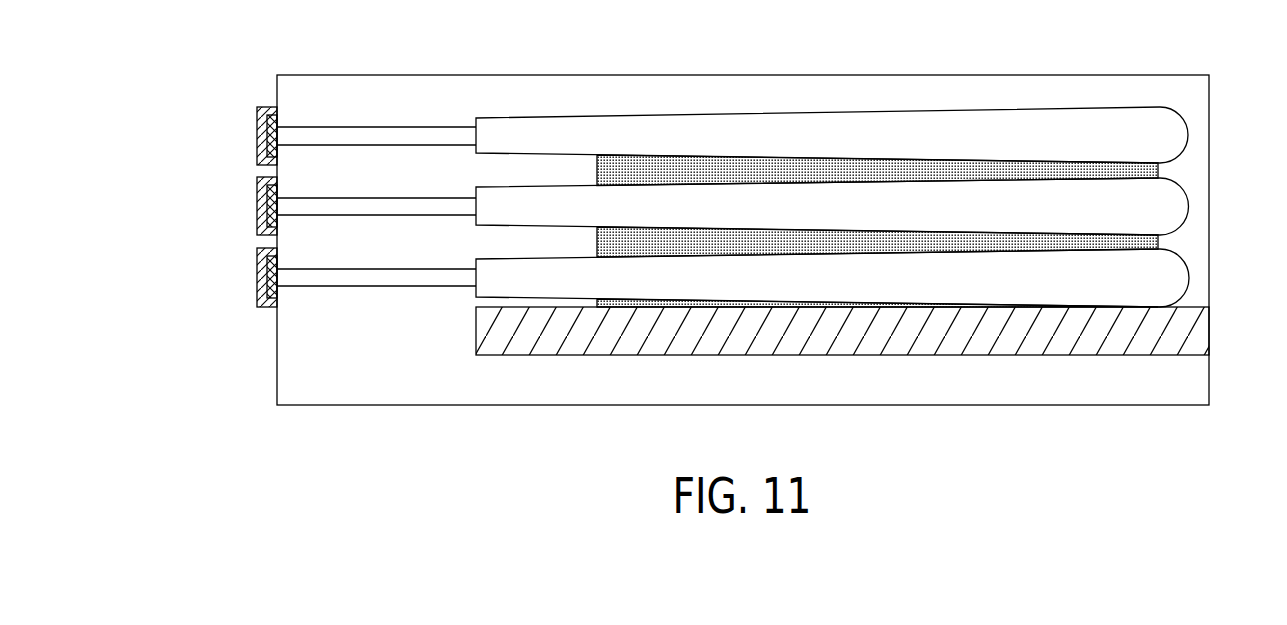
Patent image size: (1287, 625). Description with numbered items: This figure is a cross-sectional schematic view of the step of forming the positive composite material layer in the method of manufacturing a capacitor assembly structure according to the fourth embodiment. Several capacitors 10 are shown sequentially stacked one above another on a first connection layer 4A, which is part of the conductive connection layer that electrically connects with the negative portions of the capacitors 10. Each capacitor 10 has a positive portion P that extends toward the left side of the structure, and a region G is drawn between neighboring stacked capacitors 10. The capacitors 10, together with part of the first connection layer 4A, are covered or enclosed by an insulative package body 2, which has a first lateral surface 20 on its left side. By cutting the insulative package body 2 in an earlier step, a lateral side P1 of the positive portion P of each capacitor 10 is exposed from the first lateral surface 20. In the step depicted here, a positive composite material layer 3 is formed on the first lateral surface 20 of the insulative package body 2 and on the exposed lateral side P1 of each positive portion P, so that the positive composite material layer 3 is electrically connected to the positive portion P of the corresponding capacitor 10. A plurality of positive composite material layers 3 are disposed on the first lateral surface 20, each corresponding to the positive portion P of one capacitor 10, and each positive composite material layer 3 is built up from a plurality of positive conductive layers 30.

The insulative package body 2 is at (701, 226).
The positive composite material layer 3 is at (210, 183).
The positive conductive layer 30 is at (270, 106).
The lateral side of the positive portion P1 is at (258, 142).
The positive portion P is at (375, 128).
The capacitor 10 is at (1180, 123).
The gap / separator G is at (886, 165).
The first lateral surface 20 is at (277, 360).
The first connection layer 4A is at (948, 353).